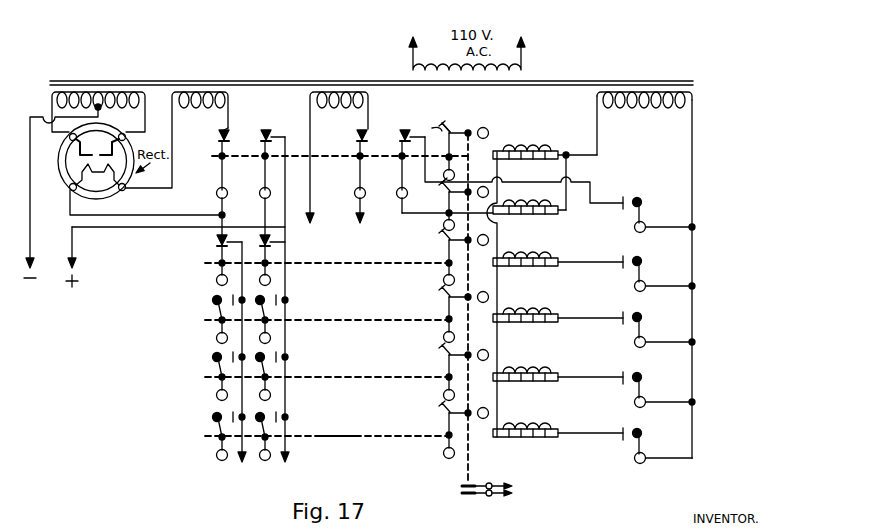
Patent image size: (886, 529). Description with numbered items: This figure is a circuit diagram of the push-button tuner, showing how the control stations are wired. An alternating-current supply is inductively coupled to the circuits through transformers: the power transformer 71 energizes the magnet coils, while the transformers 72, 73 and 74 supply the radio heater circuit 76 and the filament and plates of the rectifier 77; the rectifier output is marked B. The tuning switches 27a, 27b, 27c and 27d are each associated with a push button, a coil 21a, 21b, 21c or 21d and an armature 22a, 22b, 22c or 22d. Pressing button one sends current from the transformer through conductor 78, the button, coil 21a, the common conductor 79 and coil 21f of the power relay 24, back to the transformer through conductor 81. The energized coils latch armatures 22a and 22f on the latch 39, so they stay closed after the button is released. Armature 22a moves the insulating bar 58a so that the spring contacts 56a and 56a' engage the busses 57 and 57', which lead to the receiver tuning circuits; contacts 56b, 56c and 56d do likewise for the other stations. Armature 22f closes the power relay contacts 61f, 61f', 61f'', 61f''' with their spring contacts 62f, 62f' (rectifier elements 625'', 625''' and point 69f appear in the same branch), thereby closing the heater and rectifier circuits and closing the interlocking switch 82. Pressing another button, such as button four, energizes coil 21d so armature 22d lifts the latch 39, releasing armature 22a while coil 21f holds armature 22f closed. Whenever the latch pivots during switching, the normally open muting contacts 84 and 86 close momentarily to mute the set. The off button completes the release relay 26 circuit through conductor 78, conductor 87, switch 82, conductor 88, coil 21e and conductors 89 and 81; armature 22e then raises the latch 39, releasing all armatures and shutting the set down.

The transformer 74 is at (121, 94).
The transformer 73 is at (206, 94).
The transformer 72 is at (341, 94).
The power transformer 71 is at (692, 100).
The rectifier 77 is at (72, 190).
The power relay 24 is at (204, 149).
The spring contact 62f is at (238, 124).
The spring contact 62f' is at (281, 122).
The rectifier 625'' is at (382, 122).
The rectifier 625''' is at (426, 120).
The stationary contact 61f is at (201, 170).
The stationary contact 61f' is at (254, 170).
The stationary contact 61f'' is at (350, 178).
The stationary contact 61f''' is at (394, 177).
The junction 69f is at (357, 155).
The radio heater circuit 76 is at (355, 222).
The interlocking switch 82 is at (441, 123).
The latch 39 is at (467, 130).
The armature 22f is at (470, 147).
The armature 22e is at (443, 205).
The armature 22d is at (453, 257).
The armature 22c is at (453, 314).
The armature 22b is at (440, 370).
The armature 22a is at (440, 428).
The release relay 26 is at (447, 199).
The magnet coil 21f is at (556, 147).
The magnet coil 21e is at (551, 217).
The magnet coil 21d is at (553, 258).
The magnet coil 21c is at (552, 313).
The magnet coil 21b is at (552, 371).
The magnet coil 21a is at (553, 429).
The conductor 81 is at (598, 149).
The conductor 87 is at (526, 182).
The conductor 88 is at (412, 216).
The conductor 89 is at (567, 170).
The conductor 79 is at (499, 237).
The conductor 78 is at (696, 258).
The spring contacts 56d is at (216, 244).
The spring contacts 56c is at (210, 300).
The spring contacts 56b is at (212, 360).
The spring contacts 56a is at (213, 433).
The spring contact 56a' is at (292, 425).
The tuning switch 27d is at (301, 271).
The tuning switch 27c is at (293, 322).
The tuning switch 27b is at (299, 380).
The tuning switch 27a is at (298, 439).
The bus 57 is at (240, 364).
The bus 57' is at (283, 311).
The insulating member 58a is at (337, 448).
The muting contact 86 is at (470, 484).
The muting contact 84 is at (470, 495).
The B supply terminal B is at (49, 271).